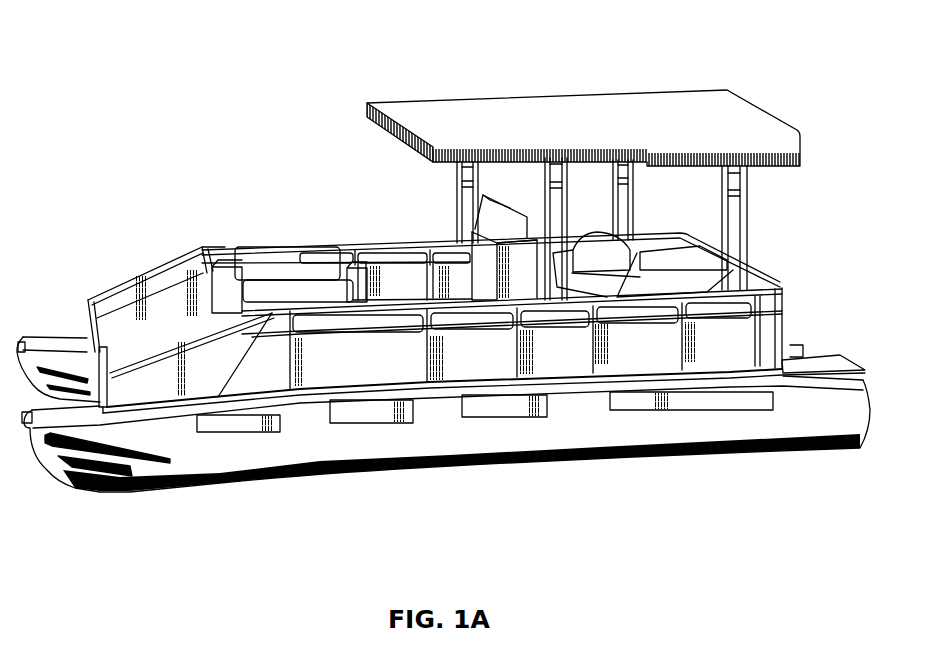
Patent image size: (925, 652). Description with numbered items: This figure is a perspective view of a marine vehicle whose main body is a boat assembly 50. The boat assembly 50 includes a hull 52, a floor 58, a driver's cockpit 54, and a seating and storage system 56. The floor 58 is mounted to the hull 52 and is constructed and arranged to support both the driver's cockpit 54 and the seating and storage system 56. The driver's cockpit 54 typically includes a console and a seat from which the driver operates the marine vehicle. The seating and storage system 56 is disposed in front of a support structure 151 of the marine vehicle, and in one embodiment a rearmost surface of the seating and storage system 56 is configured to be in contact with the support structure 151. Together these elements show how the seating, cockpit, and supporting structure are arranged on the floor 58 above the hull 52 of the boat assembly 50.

The boat assembly 50 is at (196, 113).
The hull 52 is at (73, 367).
The driver's cockpit 54 is at (452, 233).
The seating and storage system 56 is at (280, 263).
The floor 58 is at (152, 412).
The support structure 151 is at (200, 244).